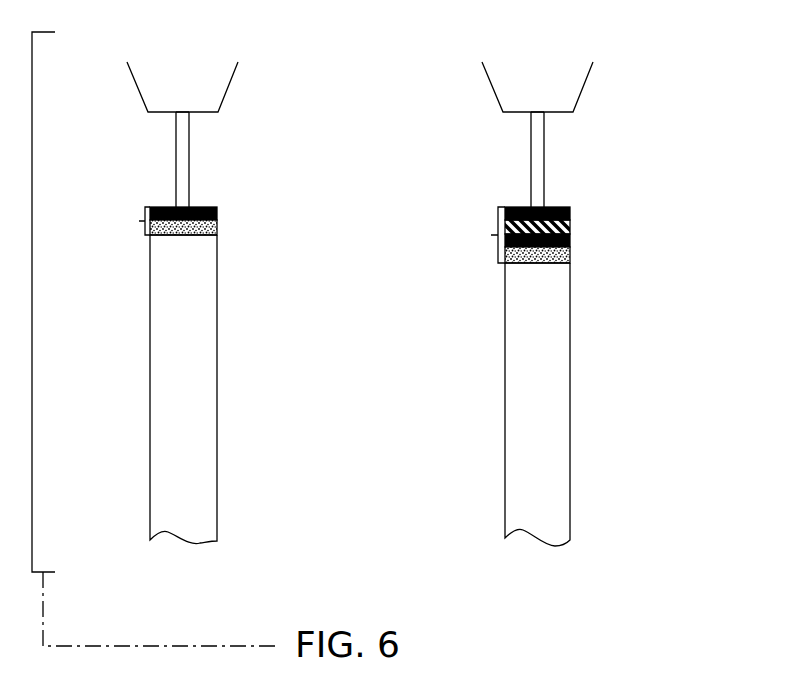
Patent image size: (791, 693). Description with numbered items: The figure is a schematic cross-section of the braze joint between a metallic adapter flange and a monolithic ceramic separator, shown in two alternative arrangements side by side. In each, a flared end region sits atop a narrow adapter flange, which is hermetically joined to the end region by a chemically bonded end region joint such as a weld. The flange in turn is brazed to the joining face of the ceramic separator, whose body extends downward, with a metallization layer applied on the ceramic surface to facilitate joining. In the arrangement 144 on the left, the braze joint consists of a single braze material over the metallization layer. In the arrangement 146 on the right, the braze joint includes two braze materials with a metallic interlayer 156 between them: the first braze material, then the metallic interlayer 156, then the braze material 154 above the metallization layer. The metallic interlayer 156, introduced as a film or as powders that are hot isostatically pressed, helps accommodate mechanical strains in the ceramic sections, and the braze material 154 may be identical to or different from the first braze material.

The arrangement 144 is at (303, 35).
The arrangement 146 is at (636, 33).
The braze material 154 is at (571, 243).
The metallic interlayer 156 is at (571, 227).